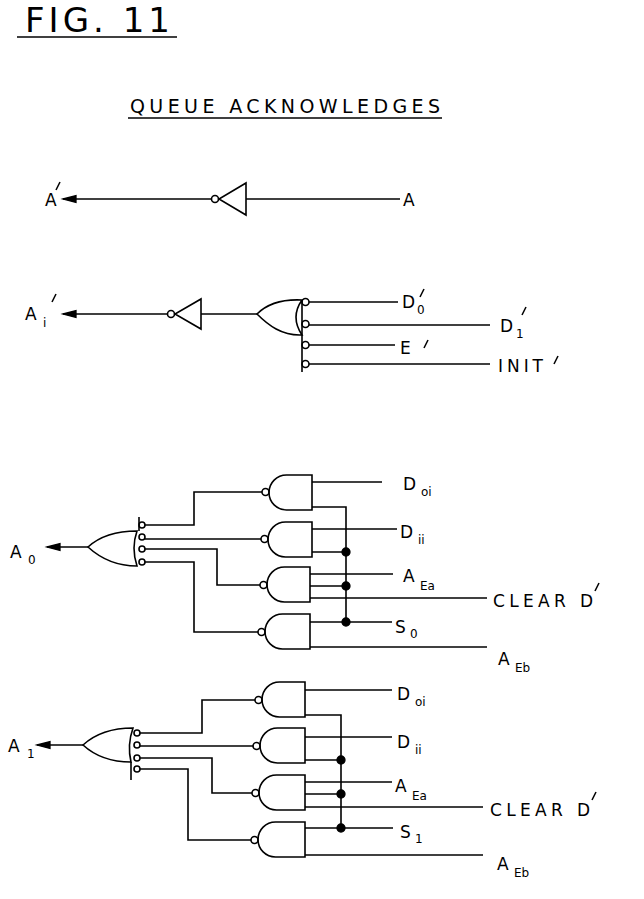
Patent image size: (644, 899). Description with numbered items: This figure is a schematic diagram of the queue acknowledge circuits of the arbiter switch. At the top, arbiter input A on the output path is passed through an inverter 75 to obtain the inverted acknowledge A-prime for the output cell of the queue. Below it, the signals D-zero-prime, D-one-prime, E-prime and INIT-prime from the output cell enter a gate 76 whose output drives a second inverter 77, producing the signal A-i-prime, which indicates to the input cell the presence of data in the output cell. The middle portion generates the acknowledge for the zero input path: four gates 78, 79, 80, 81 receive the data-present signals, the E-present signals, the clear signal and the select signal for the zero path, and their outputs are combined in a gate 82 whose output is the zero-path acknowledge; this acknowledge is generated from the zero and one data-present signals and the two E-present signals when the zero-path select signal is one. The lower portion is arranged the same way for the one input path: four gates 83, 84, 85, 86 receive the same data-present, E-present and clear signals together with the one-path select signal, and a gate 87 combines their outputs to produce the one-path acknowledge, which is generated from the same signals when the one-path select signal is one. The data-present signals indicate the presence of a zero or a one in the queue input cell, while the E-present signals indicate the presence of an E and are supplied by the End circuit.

The inverter 75 is at (232, 214).
The OR gate 76 is at (275, 334).
The inverter 77 is at (190, 329).
The NAND gate 78 is at (268, 478).
The NAND gate 79 is at (262, 526).
The NAND gate 80 is at (268, 601).
The NAND gate 81 is at (268, 650).
The OR gate 82 is at (129, 567).
The NAND gate 83 is at (262, 690).
The NAND gate 84 is at (259, 733).
The NAND gate 85 is at (264, 812).
The NAND gate 86 is at (268, 858).
The OR gate 87 is at (107, 765).